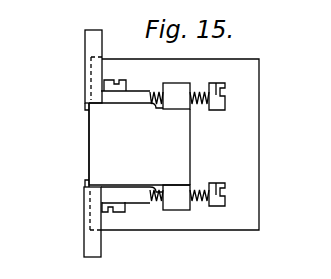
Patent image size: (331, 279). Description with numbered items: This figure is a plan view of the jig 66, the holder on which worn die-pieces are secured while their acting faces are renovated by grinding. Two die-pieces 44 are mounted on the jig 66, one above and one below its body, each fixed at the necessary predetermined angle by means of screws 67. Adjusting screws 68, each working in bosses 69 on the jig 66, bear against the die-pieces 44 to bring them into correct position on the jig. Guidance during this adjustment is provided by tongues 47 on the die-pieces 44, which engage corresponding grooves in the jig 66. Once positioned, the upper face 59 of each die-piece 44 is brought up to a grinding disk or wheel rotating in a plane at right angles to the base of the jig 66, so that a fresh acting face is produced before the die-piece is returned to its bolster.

The die-piece 44 is at (97, 31).
The tongue 47 is at (86, 181).
The acting face 59 is at (85, 68).
The jig 66 is at (149, 147).
The screw 67 is at (120, 82).
The adjusting screw 68 is at (215, 89).
The boss 69 is at (175, 87).